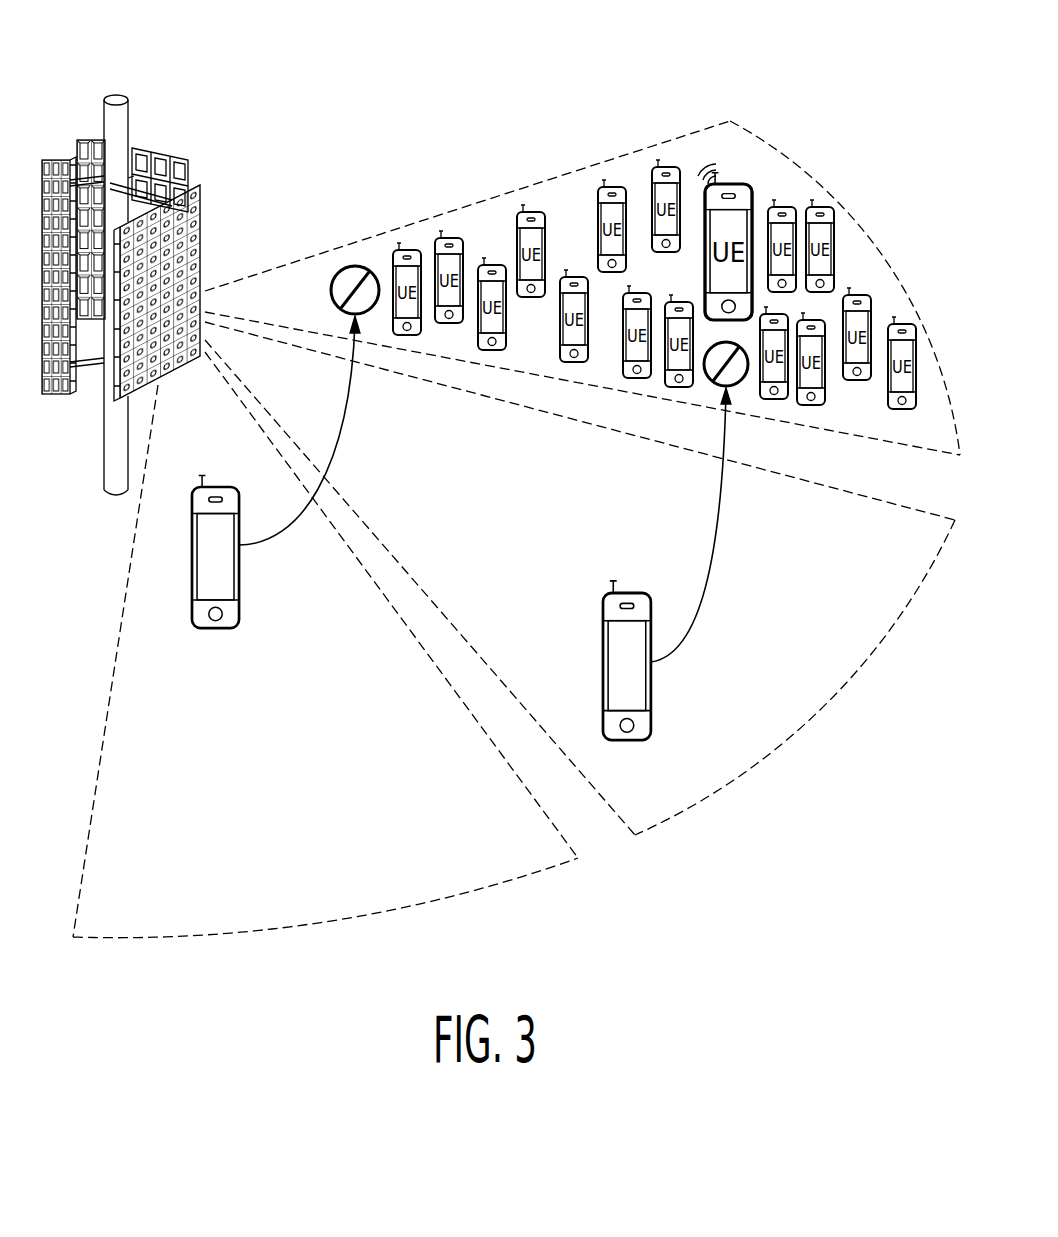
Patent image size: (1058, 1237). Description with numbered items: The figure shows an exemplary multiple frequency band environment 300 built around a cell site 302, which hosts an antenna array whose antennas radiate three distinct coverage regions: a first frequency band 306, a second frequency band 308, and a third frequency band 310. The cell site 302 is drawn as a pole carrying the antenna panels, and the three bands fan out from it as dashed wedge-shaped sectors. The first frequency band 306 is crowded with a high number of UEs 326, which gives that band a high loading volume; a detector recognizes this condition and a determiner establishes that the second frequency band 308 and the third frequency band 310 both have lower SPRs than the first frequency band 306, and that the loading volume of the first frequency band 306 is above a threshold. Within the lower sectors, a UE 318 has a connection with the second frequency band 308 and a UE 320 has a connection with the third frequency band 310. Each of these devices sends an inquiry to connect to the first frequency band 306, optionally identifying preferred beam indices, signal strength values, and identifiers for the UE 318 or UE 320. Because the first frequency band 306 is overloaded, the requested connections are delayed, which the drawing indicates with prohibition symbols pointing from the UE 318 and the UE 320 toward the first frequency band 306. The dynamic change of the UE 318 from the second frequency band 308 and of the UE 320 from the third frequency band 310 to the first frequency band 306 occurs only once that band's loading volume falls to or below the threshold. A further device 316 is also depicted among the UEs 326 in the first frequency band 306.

The multiple frequency band environment 300 is at (297, 48).
The cell site 302 is at (114, 95).
The first frequency band 306 is at (578, 168).
The second frequency band 308 is at (418, 590).
The third frequency band 310 is at (106, 690).
The user equipment 316 is at (705, 270).
The UE 318 is at (603, 666).
The UE 320 is at (215, 632).
The UEs 326 is at (836, 252).